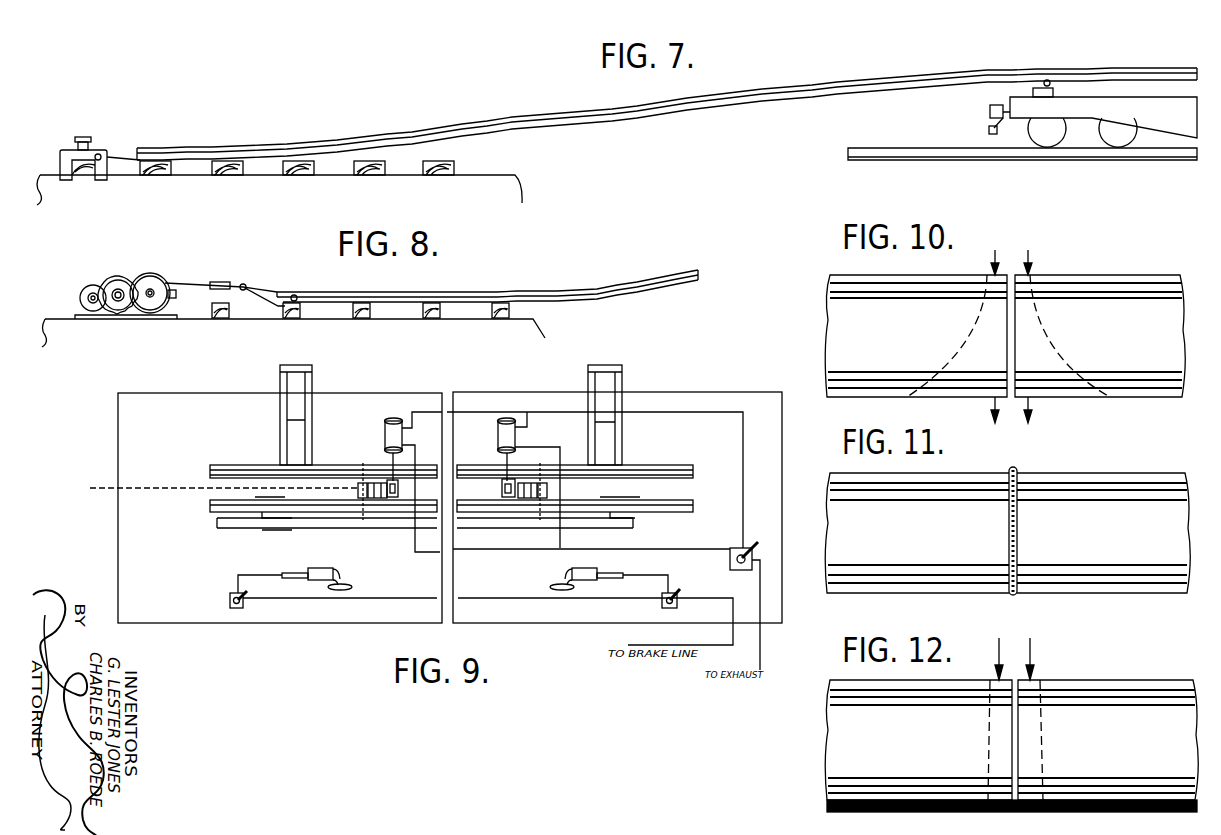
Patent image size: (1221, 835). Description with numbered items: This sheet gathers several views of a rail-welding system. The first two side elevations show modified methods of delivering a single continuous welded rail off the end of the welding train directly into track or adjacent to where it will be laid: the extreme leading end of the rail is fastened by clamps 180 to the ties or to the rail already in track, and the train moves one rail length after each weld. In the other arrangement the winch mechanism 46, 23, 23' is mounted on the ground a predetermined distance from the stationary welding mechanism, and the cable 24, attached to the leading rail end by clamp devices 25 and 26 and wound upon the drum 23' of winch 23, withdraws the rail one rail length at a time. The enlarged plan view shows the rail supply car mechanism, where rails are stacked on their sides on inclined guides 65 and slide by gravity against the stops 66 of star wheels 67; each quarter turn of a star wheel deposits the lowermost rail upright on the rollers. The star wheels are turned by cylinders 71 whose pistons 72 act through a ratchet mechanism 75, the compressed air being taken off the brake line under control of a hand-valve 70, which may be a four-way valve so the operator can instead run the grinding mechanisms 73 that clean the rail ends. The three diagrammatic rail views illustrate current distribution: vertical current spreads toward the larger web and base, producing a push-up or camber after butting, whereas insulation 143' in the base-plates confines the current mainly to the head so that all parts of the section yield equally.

In FIG. 7, the clamps 180 is at (67, 153).
In FIG. 8, the winch mechanism 46 is at (86, 286).
In FIG. 8, the winch 23 is at (118, 281).
In FIG. 8, the drum 23' is at (153, 280).
In FIG. 8, the cable 24 is at (194, 281).
In FIG. 8, the clamp device 25 is at (262, 291).
In FIG. 8, the clamp device 26 is at (290, 296).
In FIG. 9, the inclined guides 65 is at (315, 374).
In FIG. 9, the stops 66 is at (362, 500).
In FIG. 9, the star wheels 67 is at (358, 485).
In FIG. 9, the hand-valve 70 is at (740, 548).
In FIG. 9, the cylinders 71 is at (385, 433).
In FIG. 9, the pistons 72 is at (391, 459).
In FIG. 9, the grinding mechanisms 73 is at (346, 586).
In FIG. 9, the ratchet mechanism 75 is at (392, 500).
In FIG. 12, the insulation 143' is at (988, 802).